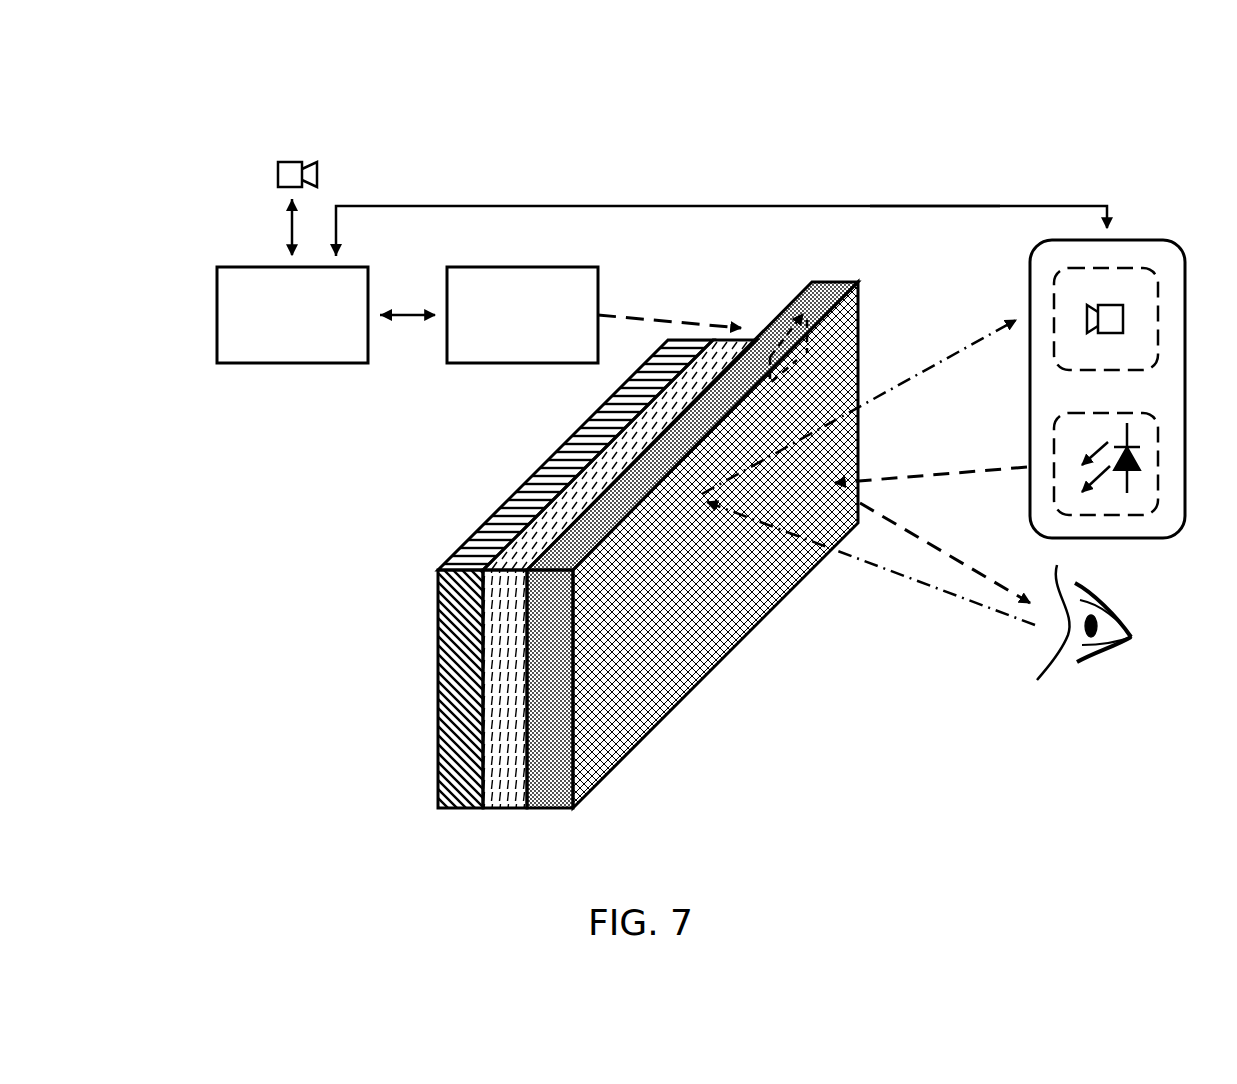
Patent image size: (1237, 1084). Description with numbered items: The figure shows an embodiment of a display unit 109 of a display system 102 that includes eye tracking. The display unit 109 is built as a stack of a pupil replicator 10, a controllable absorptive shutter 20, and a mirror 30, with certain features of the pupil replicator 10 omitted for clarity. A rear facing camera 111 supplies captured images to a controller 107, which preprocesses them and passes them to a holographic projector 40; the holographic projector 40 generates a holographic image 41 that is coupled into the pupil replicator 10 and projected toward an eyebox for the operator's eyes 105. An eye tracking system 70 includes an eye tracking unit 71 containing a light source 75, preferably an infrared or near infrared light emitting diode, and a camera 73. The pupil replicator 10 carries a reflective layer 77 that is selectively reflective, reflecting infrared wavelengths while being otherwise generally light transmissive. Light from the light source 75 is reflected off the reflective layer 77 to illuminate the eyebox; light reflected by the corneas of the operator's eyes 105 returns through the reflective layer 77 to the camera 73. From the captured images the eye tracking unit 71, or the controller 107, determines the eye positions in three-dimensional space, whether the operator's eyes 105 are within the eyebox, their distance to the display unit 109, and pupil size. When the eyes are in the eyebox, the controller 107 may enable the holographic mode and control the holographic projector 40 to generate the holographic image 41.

The pupil replicator 10 is at (573, 817).
The controllable absorptive shutter 20 is at (526, 817).
The mirror 30 is at (483, 817).
The holographic projector 40 is at (522, 315).
The holographic image 41 is at (681, 322).
The eye tracking system 70 is at (913, 162).
The eye tracking unit 71 is at (1078, 343).
The camera 73 is at (1066, 366).
The light source 75 is at (1063, 510).
The reflective layer 77 is at (858, 315).
The display system 102 is at (583, 548).
The operator's eyes 105 is at (1046, 722).
The controller 107 is at (292, 315).
The display unit 109 is at (661, 172).
The rear facing camera 111 is at (290, 160).